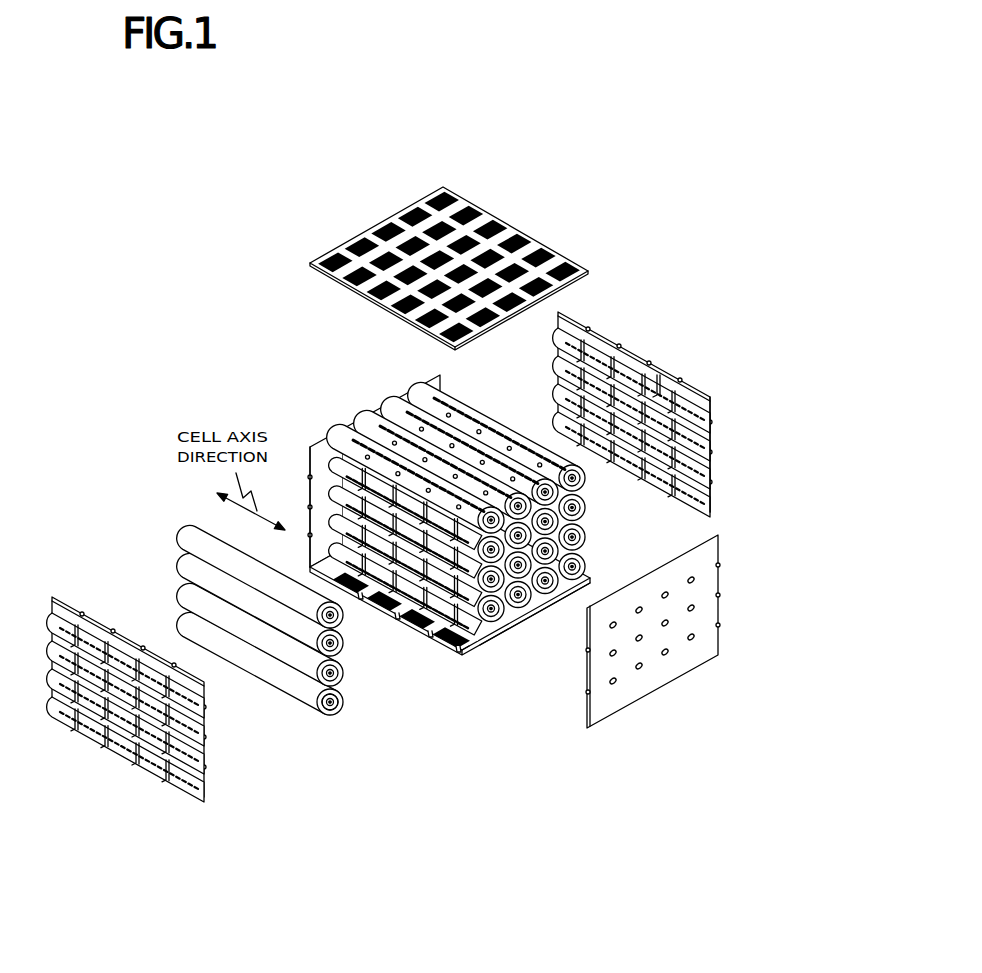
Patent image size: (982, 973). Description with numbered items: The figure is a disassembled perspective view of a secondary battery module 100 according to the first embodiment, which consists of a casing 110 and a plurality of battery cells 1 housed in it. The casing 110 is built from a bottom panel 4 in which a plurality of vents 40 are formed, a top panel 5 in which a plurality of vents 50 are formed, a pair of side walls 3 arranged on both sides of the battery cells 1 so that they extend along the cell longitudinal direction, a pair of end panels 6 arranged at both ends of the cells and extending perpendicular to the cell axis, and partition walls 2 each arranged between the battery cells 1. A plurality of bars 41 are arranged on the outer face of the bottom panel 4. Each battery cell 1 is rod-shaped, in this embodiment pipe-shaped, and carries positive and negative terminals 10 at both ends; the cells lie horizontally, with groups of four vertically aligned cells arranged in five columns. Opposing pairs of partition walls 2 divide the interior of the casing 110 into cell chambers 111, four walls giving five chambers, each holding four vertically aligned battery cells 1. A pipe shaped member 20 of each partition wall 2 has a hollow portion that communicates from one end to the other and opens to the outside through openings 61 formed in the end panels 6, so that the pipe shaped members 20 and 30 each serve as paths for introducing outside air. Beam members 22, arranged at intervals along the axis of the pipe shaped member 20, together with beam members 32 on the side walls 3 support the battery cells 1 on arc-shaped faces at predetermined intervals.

The secondary battery module 100 is at (410, 83).
The battery cell 1 is at (193, 537).
The positive and negative terminals 10 is at (334, 706).
The partition wall 2 is at (468, 618).
The pipe shaped member 20 is at (503, 628).
The beam member 22 is at (310, 447).
The side wall 3 is at (130, 757).
The pipe shaped member 30 is at (714, 442).
The beam member 32 is at (657, 383).
The bottom panel 4 is at (457, 652).
The vents 40 is at (433, 628).
The bars 41 is at (386, 614).
The top panel 5 is at (492, 212).
The vents 50 is at (410, 237).
The end panel 6 is at (320, 440).
The openings 61 is at (668, 656).
The casing 110 is at (350, 413).
The cell chamber 111 is at (408, 378).